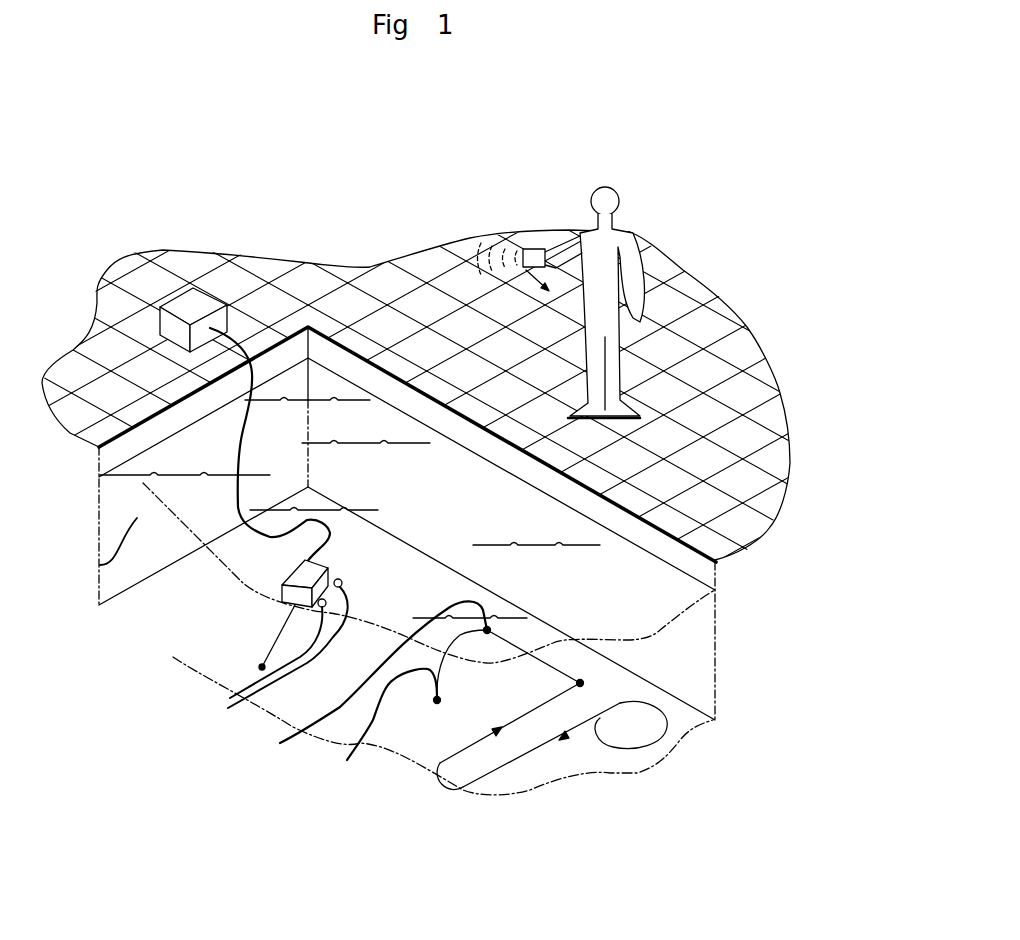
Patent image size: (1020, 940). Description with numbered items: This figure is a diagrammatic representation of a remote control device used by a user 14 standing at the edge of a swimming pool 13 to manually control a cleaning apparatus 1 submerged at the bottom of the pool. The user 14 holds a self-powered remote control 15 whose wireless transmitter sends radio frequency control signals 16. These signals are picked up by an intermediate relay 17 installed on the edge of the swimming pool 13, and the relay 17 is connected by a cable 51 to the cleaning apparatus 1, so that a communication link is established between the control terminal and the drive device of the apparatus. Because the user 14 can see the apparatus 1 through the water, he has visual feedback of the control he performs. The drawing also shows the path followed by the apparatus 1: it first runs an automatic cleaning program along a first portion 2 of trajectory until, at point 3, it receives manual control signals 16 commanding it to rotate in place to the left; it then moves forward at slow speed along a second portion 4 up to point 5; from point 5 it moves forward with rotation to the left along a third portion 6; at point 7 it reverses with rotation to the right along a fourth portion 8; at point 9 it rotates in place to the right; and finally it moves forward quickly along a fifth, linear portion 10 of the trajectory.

The cleaning apparatus 1 is at (280, 587).
The first portion of trajectory 2 is at (597, 727).
The point 3 is at (580, 683).
The second portion of trajectory 4 is at (520, 650).
The point 5 is at (377, 681).
The third portion of trajectory 6 is at (382, 725).
The point 7 is at (437, 700).
The fourth portion of trajectory 8 is at (338, 655).
The point 9 is at (262, 667).
The fifth portion of linear trajectory 10 is at (280, 638).
The swimming pool 13 is at (100, 565).
The user 14 is at (633, 232).
The remote control 15 is at (527, 253).
The radio frequency control signals 16 is at (483, 257).
The intermediate relay 17 is at (163, 325).
The cable 51 is at (237, 455).